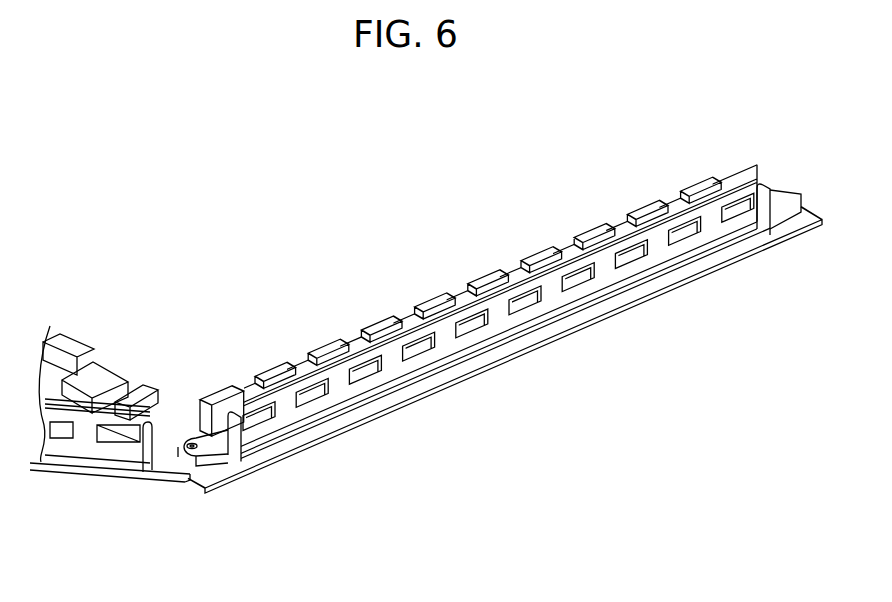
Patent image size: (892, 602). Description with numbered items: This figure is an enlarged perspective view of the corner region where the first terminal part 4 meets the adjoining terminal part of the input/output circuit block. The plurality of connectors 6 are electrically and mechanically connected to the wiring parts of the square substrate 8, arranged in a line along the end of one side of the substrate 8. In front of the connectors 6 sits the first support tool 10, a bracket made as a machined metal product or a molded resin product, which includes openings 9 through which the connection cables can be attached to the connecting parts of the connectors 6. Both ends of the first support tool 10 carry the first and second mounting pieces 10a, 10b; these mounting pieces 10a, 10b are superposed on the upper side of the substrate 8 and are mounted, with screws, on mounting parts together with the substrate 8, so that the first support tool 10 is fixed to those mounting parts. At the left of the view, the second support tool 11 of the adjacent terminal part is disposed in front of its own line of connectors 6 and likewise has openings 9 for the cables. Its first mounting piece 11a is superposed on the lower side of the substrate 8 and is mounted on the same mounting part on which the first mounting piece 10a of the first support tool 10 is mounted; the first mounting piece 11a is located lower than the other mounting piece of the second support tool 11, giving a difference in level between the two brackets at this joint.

The first terminal part 4 is at (656, 302).
The connectors 6 is at (533, 246).
The substrate 8 is at (709, 141).
The openings 9 is at (476, 321).
The first support tool 10 is at (584, 310).
The first mounting piece 10a is at (213, 446).
The second mounting piece 10b is at (790, 196).
The second support tool 11 is at (88, 448).
The first mounting piece 11a is at (171, 462).